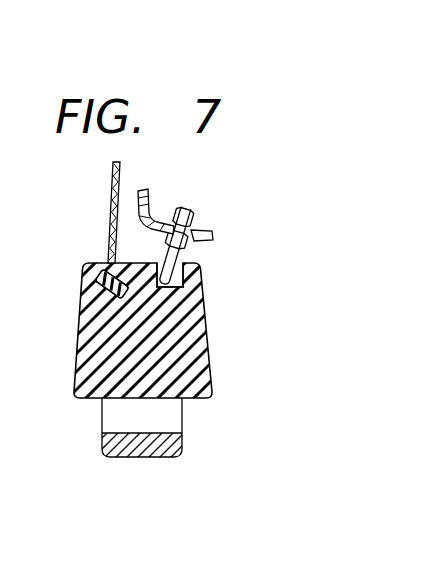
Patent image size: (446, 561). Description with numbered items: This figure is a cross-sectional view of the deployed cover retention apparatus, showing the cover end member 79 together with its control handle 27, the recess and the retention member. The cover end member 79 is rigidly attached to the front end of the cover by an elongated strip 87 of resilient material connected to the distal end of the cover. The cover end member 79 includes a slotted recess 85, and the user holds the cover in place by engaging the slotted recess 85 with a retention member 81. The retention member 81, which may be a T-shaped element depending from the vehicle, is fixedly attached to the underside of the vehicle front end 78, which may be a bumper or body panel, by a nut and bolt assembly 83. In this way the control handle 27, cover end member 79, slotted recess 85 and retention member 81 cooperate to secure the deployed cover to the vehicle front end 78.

The control handle 27 is at (160, 458).
The vehicle front end 78 is at (152, 189).
The cover end member 79 is at (209, 368).
The retention member 81 is at (112, 192).
The nut and bolt assembly 83 is at (196, 225).
The slotted recess 85 is at (152, 262).
The elongated strip 87 is at (98, 286).